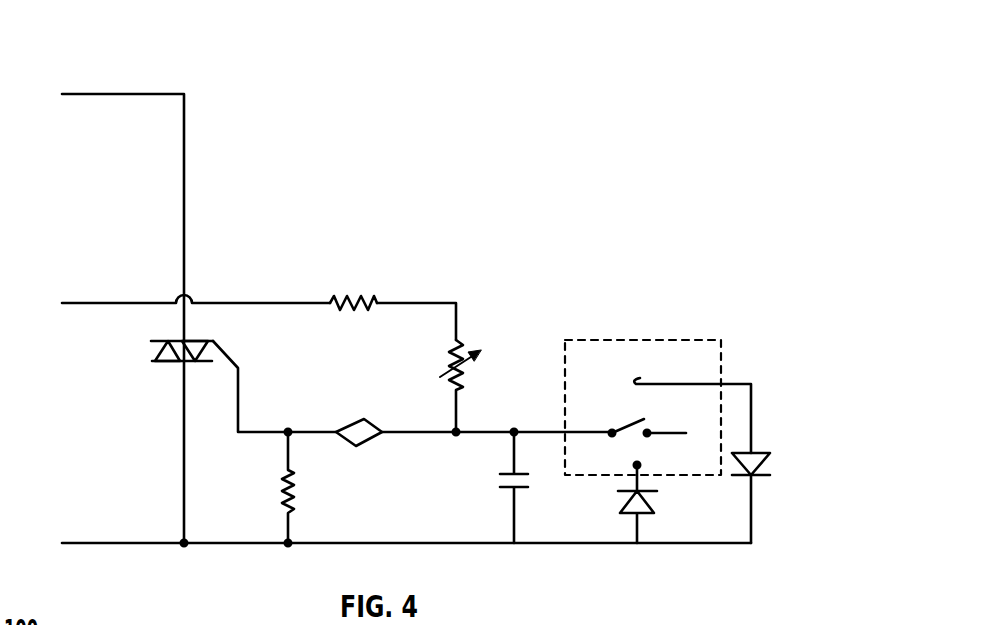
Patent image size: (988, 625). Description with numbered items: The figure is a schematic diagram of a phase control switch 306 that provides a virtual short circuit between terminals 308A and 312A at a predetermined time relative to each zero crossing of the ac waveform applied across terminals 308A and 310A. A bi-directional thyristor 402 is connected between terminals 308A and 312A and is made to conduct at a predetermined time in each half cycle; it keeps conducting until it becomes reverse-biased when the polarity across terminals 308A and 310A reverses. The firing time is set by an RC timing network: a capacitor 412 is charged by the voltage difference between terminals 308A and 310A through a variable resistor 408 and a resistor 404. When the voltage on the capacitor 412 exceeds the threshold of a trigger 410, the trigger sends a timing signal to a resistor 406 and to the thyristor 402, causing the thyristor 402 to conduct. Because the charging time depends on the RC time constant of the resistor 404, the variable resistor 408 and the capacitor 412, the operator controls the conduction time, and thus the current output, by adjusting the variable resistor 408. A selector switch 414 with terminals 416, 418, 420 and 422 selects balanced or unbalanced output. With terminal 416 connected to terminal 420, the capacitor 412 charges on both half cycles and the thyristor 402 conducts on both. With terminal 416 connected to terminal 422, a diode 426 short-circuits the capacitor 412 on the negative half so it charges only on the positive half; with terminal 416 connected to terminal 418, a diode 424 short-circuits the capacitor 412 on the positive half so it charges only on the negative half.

The phase control switch 306 is at (298, 80).
The terminal 312A is at (99, 310).
The terminal 310A is at (235, 314).
The terminal 308A is at (382, 545).
The bi-directional thyristor 402 is at (186, 338).
The resistor 404 is at (378, 282).
The resistor 406 is at (292, 488).
The variable resistor 408 is at (462, 368).
The trigger 410 is at (378, 430).
The capacitor 412 is at (500, 472).
The selector switch 414 is at (629, 336).
The terminal 416 is at (611, 428).
The terminal 418 is at (640, 378).
The terminal 420 is at (651, 432).
The terminal 422 is at (640, 463).
The diode 424 is at (766, 458).
The diode 426 is at (617, 503).